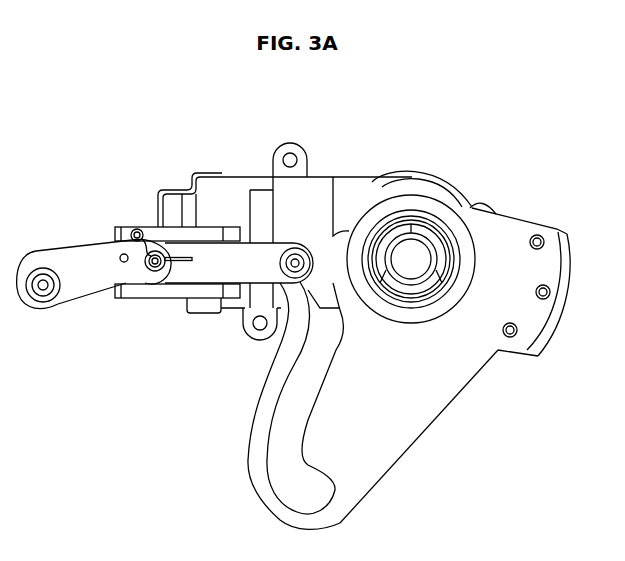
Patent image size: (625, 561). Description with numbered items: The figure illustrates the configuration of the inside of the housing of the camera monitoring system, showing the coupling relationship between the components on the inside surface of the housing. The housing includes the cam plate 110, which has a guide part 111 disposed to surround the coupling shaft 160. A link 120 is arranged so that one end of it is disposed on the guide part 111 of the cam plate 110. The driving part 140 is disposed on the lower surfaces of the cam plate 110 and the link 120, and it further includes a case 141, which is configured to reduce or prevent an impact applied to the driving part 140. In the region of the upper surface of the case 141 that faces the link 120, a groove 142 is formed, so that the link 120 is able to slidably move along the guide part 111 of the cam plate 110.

The cam plate 110 is at (407, 418).
The guide part 111 is at (287, 468).
The link 120 is at (80, 258).
The driving part 140 is at (187, 207).
The case 141 is at (245, 197).
The groove 142 is at (176, 298).
The coupling shaft 160 is at (418, 250).